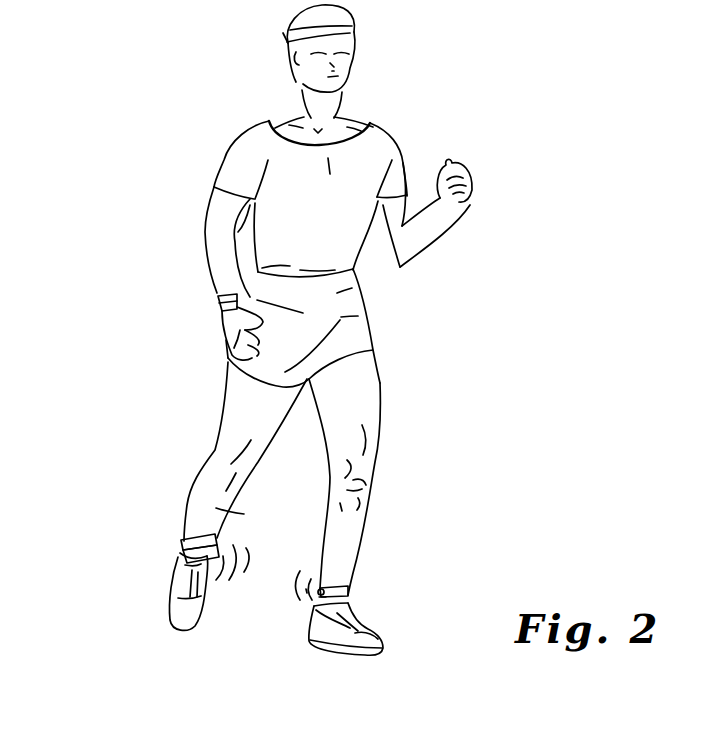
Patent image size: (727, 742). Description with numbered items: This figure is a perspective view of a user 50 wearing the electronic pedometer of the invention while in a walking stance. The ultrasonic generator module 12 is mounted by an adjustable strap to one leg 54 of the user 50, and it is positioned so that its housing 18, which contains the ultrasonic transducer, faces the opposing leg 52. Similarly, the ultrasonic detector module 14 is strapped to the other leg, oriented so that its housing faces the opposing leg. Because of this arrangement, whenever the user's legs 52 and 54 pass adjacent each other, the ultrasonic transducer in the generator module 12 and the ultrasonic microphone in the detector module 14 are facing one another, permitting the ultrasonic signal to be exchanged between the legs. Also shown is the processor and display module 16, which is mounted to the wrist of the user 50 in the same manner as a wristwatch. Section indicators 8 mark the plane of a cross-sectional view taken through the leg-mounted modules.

The section line 8- 8 is at (124, 537).
The ultrasonic generator module 12 is at (360, 585).
The ultrasonic detector module 14 is at (174, 530).
The processor and display module 16 is at (206, 300).
The housing 18 is at (319, 599).
The user 50 is at (522, 233).
The leg 52 is at (246, 490).
The leg 54 is at (320, 568).